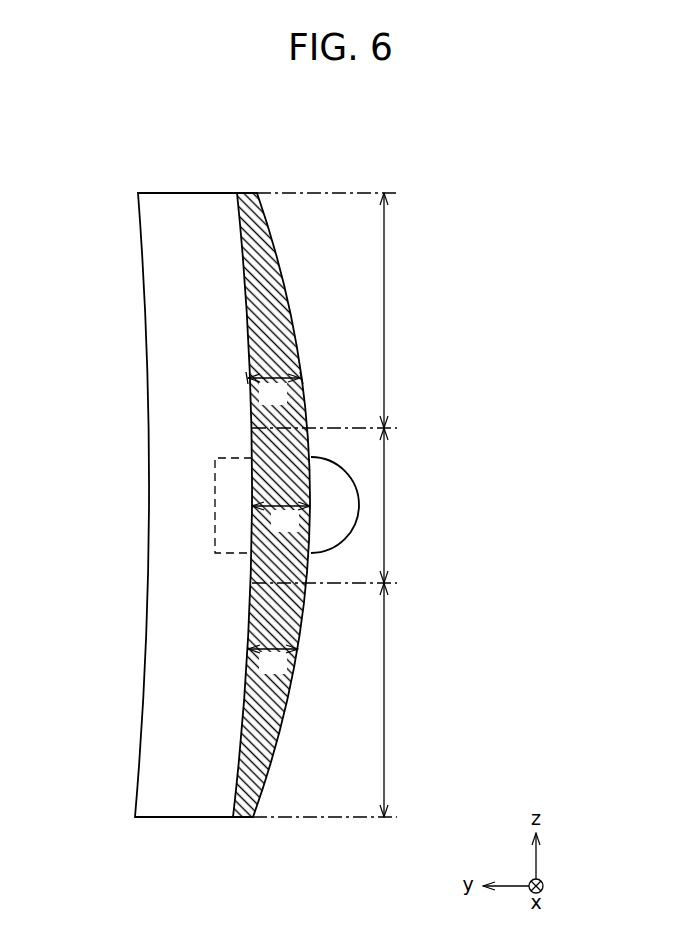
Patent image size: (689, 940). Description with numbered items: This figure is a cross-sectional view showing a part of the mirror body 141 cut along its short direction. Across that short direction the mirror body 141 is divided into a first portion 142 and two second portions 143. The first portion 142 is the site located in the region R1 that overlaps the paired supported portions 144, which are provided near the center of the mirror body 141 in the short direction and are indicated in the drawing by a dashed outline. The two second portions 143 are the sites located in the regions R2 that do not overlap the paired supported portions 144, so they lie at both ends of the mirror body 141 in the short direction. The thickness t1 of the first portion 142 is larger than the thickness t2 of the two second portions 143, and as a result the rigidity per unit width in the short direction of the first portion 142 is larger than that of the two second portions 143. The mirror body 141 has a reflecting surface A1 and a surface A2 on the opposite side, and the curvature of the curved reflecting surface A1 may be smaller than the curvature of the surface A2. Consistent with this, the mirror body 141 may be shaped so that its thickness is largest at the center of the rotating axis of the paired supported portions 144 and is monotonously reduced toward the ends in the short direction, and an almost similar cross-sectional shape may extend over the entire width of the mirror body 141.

The mirror body 141 is at (153, 229).
The first portion 142 is at (256, 568).
The second portions 143 is at (245, 293).
The paired supported portions 144 is at (228, 504).
The reflecting surface A1 is at (246, 378).
The surface on the opposite side to the reflecting surface A2 is at (304, 378).
The thickness in first portion t1 is at (281, 520).
The thickness of second portions t2 is at (274, 527).
The region overlapping paired supported portions R1 is at (340, 505).
The region not overlapping paired supported portions R2 is at (338, 505).